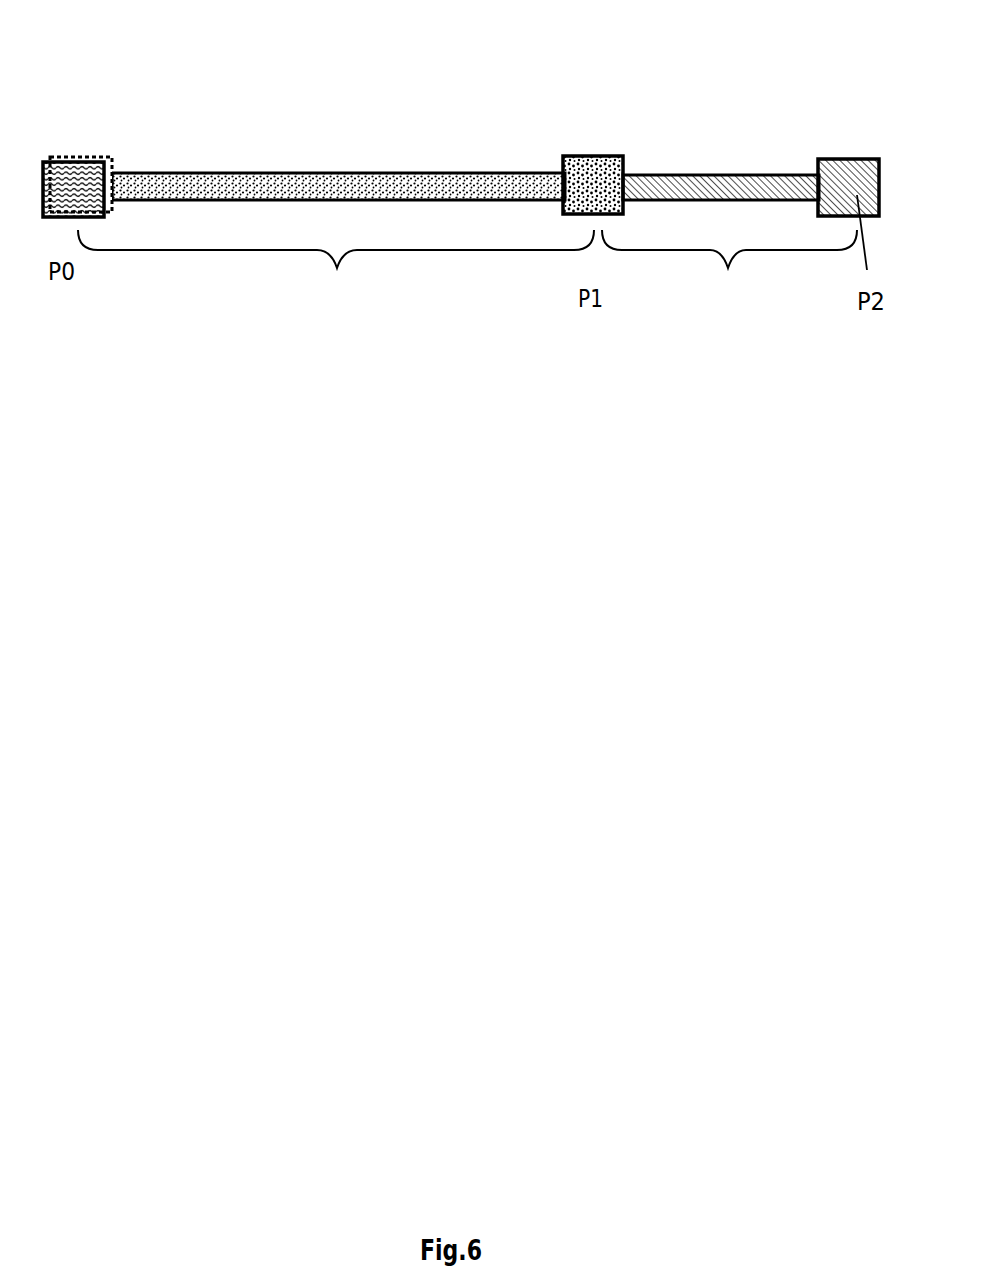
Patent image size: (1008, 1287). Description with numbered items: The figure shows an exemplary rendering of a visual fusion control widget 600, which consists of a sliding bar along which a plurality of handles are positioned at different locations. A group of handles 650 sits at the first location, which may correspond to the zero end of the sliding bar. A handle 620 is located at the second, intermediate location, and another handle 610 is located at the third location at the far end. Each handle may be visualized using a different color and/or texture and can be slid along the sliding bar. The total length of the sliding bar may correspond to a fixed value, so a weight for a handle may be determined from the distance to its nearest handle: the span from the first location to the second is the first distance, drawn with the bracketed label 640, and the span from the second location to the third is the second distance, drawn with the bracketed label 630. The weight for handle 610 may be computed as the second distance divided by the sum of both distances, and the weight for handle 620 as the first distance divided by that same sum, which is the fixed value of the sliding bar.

The visual fusion control widget 600 is at (398, 150).
The handle 610 is at (846, 160).
The handle 620 is at (587, 157).
The second fiber span W2 630 is at (729, 270).
The first fiber span W1 640 is at (336, 299).
The group of handles 650 is at (71, 160).